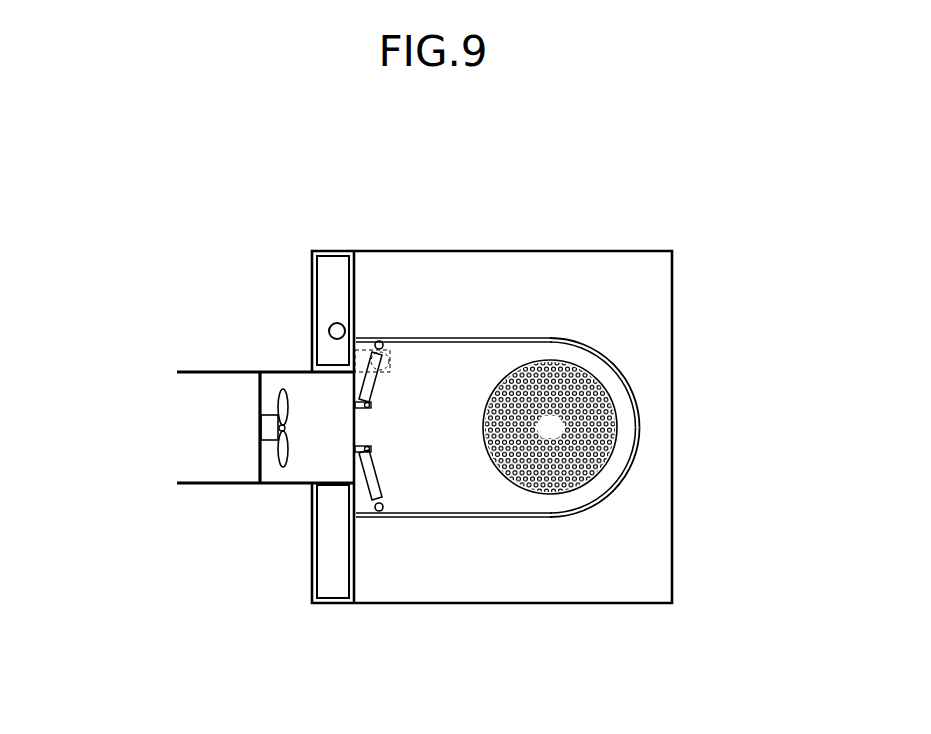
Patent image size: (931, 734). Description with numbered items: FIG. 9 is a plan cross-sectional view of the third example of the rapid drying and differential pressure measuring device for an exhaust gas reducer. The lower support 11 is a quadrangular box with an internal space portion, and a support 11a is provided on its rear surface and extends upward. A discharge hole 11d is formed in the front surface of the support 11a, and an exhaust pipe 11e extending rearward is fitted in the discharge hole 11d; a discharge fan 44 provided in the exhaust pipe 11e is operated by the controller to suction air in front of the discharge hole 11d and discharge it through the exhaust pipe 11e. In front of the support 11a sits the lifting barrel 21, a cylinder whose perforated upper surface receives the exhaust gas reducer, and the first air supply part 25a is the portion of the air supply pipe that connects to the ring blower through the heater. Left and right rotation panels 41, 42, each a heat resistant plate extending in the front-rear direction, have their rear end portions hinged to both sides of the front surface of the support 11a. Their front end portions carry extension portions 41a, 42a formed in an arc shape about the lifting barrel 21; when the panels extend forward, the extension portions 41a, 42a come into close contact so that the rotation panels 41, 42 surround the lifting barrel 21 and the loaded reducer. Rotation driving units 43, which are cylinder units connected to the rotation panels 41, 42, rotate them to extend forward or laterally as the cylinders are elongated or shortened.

The lower support 11 is at (673, 326).
The support 11a is at (313, 275).
The discharge hole 11d is at (354, 470).
The exhaust pipe 11e is at (205, 372).
The lifting barrel 21 is at (617, 422).
The first air supply part 25a is at (337, 322).
The left rotation panel 41 is at (497, 340).
The extension portion 41a is at (587, 340).
The right rotation panel 42 is at (523, 518).
The extension portion 42a is at (631, 471).
The rotation driving unit 43 is at (376, 392).
The discharge fan 44 is at (258, 428).